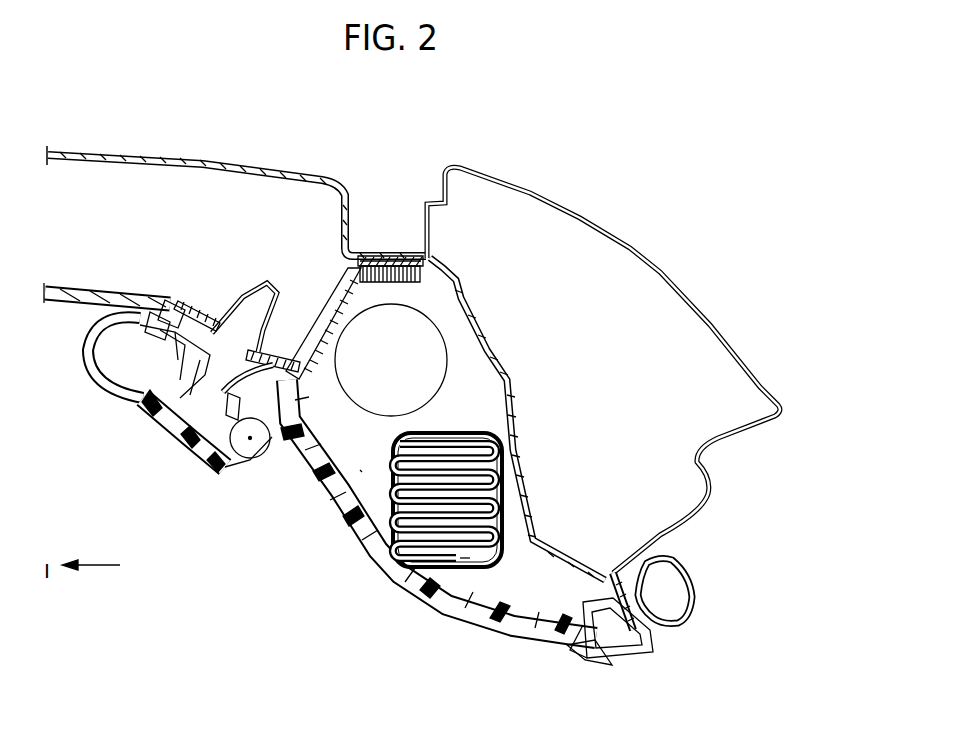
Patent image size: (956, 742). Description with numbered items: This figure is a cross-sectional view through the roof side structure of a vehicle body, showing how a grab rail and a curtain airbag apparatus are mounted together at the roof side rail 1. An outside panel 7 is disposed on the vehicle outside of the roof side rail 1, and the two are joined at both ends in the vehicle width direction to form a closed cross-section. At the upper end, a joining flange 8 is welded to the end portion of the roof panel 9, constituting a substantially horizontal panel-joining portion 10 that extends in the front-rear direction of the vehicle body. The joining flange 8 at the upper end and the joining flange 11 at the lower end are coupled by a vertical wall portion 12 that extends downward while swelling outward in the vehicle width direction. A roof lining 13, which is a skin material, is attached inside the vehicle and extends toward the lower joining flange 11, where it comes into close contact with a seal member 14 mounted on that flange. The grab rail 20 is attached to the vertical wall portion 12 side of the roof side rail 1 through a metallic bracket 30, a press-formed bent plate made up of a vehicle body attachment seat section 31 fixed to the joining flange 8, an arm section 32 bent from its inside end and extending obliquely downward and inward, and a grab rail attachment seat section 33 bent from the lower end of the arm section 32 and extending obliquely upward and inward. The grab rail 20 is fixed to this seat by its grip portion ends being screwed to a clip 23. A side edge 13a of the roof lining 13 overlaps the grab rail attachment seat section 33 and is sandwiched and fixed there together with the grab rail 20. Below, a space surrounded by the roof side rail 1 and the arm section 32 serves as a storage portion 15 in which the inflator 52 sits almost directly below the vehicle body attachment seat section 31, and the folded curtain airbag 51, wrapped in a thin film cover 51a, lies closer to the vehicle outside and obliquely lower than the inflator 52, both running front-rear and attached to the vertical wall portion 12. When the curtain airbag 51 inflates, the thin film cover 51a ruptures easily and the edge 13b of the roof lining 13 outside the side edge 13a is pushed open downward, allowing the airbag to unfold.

The roof side rail 1 is at (515, 382).
The outside panel 7 is at (650, 263).
The joining flange 8 is at (398, 252).
The roof panel 9 is at (205, 162).
The panel-joining portion 10 is at (375, 250).
The joining flange 11 is at (622, 612).
The vertical wall portion 12 is at (518, 452).
The roof lining 13 is at (50, 306).
The side edge 13a is at (172, 300).
The edge 13b is at (535, 650).
The seal member 14 is at (652, 635).
The storage portion 15 is at (360, 472).
The grab rail 20 is at (175, 440).
The clip 23 is at (250, 285).
The bracket 30 is at (335, 290).
The vehicle body attachment seat section 31 is at (400, 284).
The arm section 32 is at (297, 345).
The grab rail attachment seat section 33 is at (207, 305).
The curtain airbag 51 is at (457, 566).
The thin film cover 51a is at (487, 566).
The inflator 52 is at (340, 437).